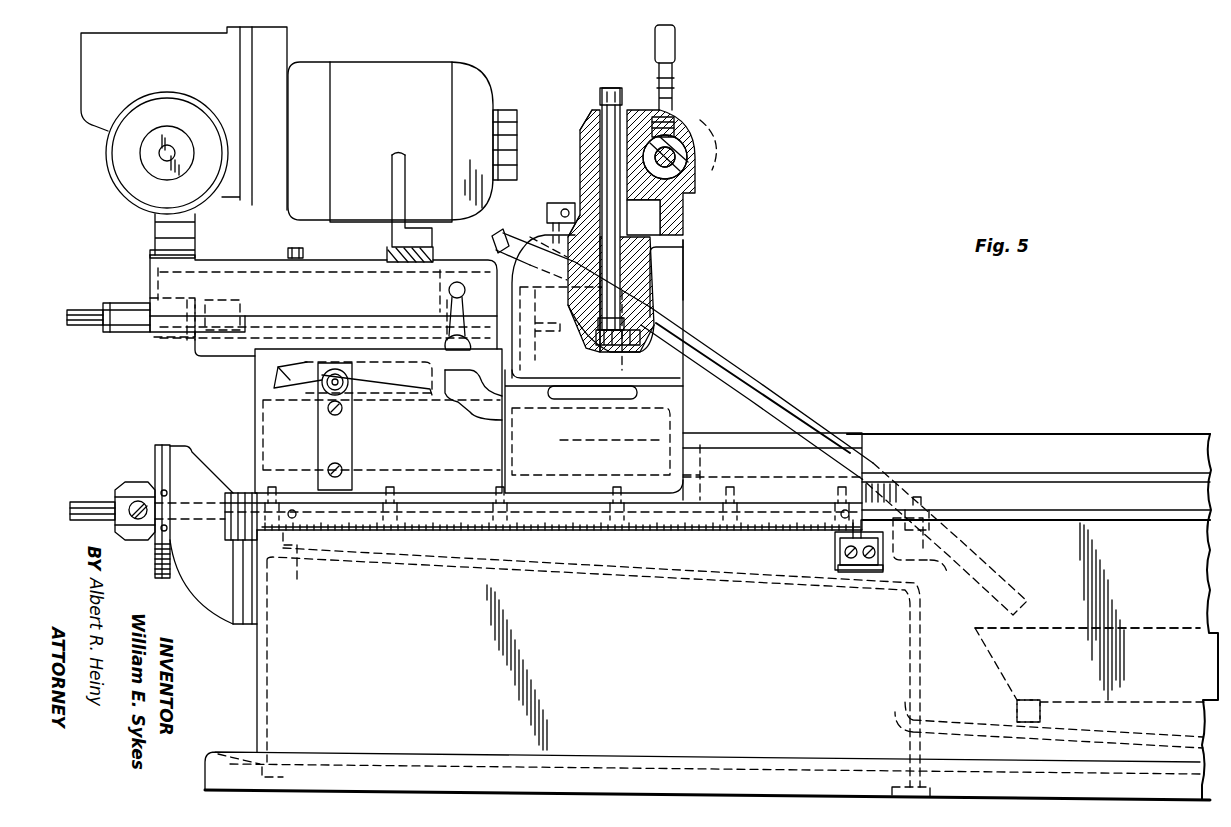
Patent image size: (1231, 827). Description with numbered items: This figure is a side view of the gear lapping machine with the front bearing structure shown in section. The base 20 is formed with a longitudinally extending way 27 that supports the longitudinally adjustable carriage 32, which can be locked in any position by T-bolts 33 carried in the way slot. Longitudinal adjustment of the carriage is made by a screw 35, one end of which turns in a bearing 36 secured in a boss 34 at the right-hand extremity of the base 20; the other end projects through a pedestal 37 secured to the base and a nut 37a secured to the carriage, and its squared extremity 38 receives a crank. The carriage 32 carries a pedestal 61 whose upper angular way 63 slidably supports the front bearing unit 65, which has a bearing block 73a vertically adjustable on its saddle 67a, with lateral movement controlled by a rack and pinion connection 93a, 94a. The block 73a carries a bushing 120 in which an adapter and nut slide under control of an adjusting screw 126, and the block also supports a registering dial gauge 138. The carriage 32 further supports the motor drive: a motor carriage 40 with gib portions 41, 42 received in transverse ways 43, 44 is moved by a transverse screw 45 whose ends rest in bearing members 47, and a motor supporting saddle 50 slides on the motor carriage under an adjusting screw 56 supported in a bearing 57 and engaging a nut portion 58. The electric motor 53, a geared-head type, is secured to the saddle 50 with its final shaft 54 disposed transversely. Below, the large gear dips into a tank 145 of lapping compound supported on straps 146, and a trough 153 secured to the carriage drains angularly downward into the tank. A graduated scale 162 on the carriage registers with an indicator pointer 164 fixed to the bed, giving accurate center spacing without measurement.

The base 20 is at (707, 661).
The longitudinally extending way 27 is at (1000, 440).
The carriage 32 is at (378, 421).
The T-bolt 33 is at (747, 493).
The boss 34 is at (918, 565).
The screw 35 is at (110, 493).
The bearing 36 is at (935, 543).
The pedestal 37 is at (206, 534).
The nut 37a is at (543, 547).
The screw extremity 38 is at (85, 500).
The motor carriage 40 is at (195, 354).
The gib portion 41 is at (290, 379).
The gib portion 42 is at (478, 411).
The transverse way 43 is at (262, 373).
The transverse way 44 is at (478, 378).
The transverse screw 45 is at (343, 392).
The bearing member 47 is at (270, 437).
The motor supporting saddle 50 is at (323, 302).
The electric motor 53 is at (299, 124).
The final shaft 54 is at (158, 162).
The adjusting screw 56 is at (105, 308).
The bearing 57 is at (132, 303).
The nut portion 58 is at (250, 300).
The pedestal 61 is at (684, 325).
The angular way 63 is at (493, 262).
The front bearing unit 65 is at (693, 105).
The saddle 67a is at (684, 292).
The bearing block 73a is at (690, 208).
The rack 93a is at (622, 320).
The pinion 94a is at (650, 348).
The bushing 120 is at (698, 128).
The adjusting screw 126 is at (690, 157).
The registering dial gauge 138 is at (676, 38).
The tank 145 is at (1180, 628).
The strap 146 is at (1043, 712).
The trough 153 is at (815, 418).
The scale 162 is at (700, 536).
The indicator pointer 164 is at (835, 546).